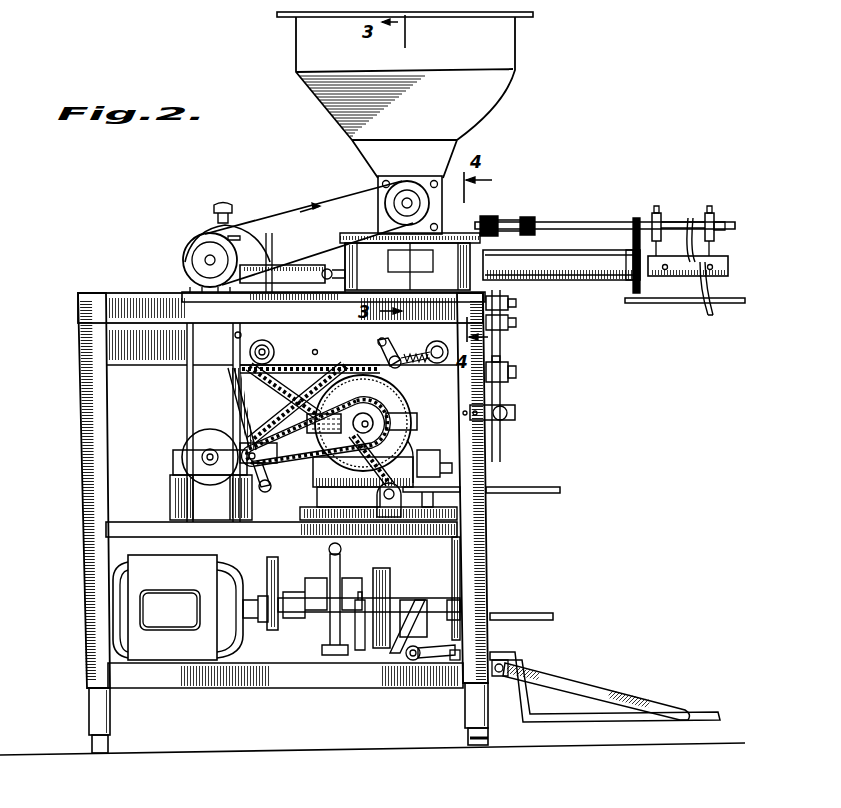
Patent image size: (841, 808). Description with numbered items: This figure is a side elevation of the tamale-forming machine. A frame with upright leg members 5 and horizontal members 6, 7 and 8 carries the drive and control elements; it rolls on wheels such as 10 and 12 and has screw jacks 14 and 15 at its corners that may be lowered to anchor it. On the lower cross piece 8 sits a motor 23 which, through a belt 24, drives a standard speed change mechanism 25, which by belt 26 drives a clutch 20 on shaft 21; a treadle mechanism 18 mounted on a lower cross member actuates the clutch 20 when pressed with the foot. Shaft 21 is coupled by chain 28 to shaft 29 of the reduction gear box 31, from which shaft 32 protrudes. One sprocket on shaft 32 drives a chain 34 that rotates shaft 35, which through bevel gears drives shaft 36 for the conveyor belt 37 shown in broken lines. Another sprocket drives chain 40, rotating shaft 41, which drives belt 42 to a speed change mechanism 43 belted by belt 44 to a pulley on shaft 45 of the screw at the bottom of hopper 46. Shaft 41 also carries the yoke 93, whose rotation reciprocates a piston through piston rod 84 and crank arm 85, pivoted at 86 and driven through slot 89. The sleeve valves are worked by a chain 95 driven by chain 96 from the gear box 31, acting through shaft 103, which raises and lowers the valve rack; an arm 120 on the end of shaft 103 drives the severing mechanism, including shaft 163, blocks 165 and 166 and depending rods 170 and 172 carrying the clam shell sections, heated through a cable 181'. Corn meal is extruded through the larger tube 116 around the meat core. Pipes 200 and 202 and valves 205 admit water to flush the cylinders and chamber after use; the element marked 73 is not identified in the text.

The upright leg members 5 is at (75, 449).
The horizontal member 6 is at (134, 305).
The horizontal member 7 is at (143, 527).
The lower cross piece 8 is at (292, 678).
The wheel 10 is at (466, 736).
The wheel 12 is at (108, 744).
The screw jack 14 is at (465, 701).
The screw jack 15 is at (110, 708).
The treadle mechanism 18 is at (578, 715).
The clutch 20 is at (414, 598).
The shaft 21 is at (514, 612).
The motor 23 is at (178, 607).
The belt 24 is at (273, 630).
The speed change mechanism 25 is at (326, 618).
The belt 26 is at (400, 658).
The chain 28 is at (452, 546).
The shaft 29 is at (440, 466).
The reduction gear box 31 is at (412, 397).
The shaft 32 is at (375, 416).
The chain 34 is at (378, 488).
The shaft 35 is at (388, 505).
The shaft 36 is at (520, 494).
The belt 37 is at (668, 304).
The chain 40 is at (292, 463).
The shaft 41 is at (202, 457).
The belt 42 is at (186, 390).
The speed change mechanism 43 is at (183, 238).
The belt 44 is at (297, 220).
The shaft 45 is at (408, 198).
The hopper 46 is at (512, 56).
The cylinder 73 is at (466, 262).
The piston rod 84 is at (296, 268).
The crank arm 85 is at (232, 402).
The pivot 86 is at (240, 338).
The slot 89 is at (268, 492).
The yoke 93 is at (262, 446).
The chain 95 is at (308, 372).
The chain 96 is at (290, 396).
The shaft 103 is at (333, 277).
The tube 116 is at (561, 265).
The arm 120 is at (378, 352).
The shaft 163 is at (572, 222).
The block 165 is at (662, 222).
The block 166 is at (714, 222).
The depending rod 170 is at (712, 246).
The depending rod 172 is at (636, 218).
The cable 181' is at (702, 282).
The pipe 200 is at (503, 348).
The pipe 202 is at (500, 296).
The valves 205 is at (508, 370).